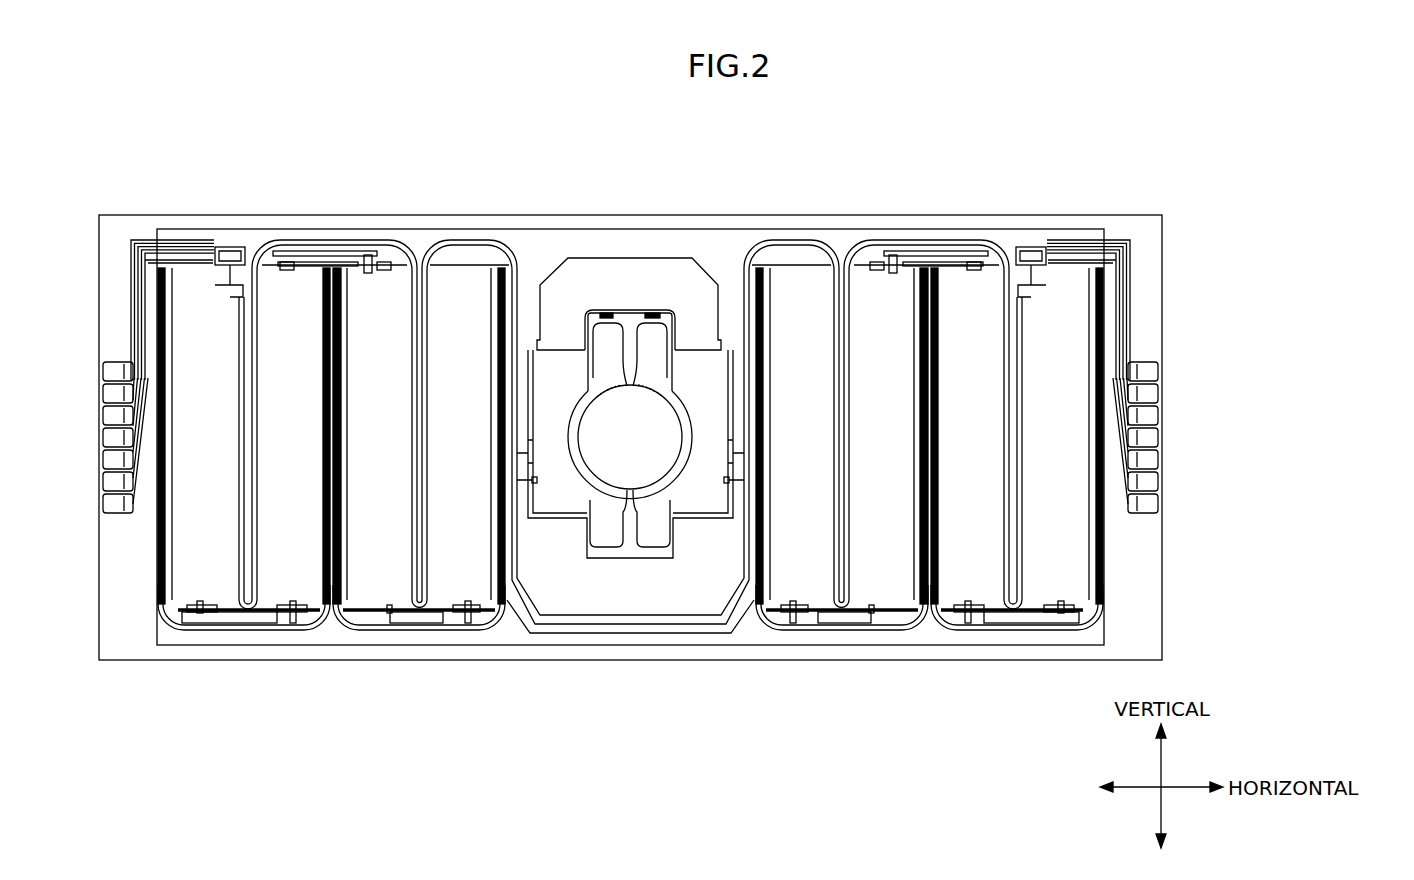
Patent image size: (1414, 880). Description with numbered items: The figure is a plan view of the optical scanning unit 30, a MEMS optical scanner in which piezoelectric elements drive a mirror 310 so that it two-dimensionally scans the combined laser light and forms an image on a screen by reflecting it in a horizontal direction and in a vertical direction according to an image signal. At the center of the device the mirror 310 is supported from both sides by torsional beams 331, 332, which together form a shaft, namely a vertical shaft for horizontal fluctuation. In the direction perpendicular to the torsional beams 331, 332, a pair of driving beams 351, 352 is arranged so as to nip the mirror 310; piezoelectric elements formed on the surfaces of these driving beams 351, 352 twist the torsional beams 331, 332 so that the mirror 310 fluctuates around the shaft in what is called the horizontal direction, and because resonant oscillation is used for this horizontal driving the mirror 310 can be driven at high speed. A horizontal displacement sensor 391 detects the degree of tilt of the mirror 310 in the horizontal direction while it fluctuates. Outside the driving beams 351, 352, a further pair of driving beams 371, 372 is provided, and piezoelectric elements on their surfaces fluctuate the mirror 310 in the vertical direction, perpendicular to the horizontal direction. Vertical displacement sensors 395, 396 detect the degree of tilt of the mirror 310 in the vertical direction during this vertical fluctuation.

The optical scanning unit 30 is at (107, 158).
The mirror 310 is at (635, 455).
The torsional beam 331 is at (628, 518).
The torsional beam 332 is at (630, 345).
The driving beam 351 is at (708, 502).
The driving beam 352 is at (568, 503).
The driving beam 371 is at (777, 617).
The driving beam 372 is at (485, 618).
The horizontal displacement sensor 391 is at (605, 312).
The vertical displacement sensor 395 is at (1023, 265).
The vertical displacement sensor 396 is at (236, 265).